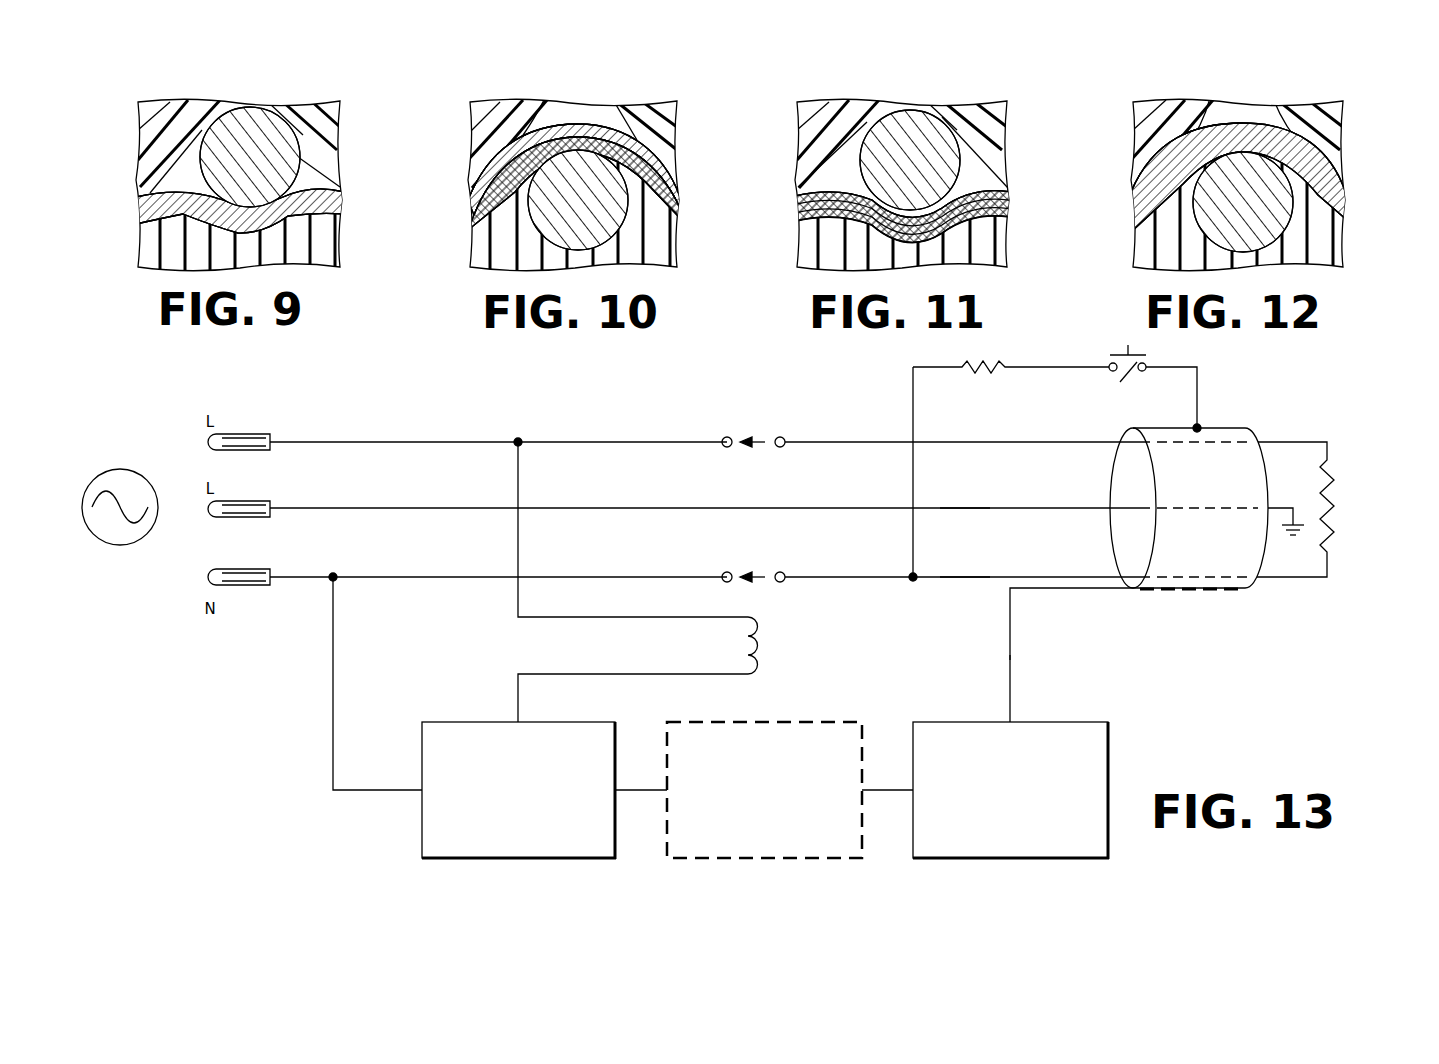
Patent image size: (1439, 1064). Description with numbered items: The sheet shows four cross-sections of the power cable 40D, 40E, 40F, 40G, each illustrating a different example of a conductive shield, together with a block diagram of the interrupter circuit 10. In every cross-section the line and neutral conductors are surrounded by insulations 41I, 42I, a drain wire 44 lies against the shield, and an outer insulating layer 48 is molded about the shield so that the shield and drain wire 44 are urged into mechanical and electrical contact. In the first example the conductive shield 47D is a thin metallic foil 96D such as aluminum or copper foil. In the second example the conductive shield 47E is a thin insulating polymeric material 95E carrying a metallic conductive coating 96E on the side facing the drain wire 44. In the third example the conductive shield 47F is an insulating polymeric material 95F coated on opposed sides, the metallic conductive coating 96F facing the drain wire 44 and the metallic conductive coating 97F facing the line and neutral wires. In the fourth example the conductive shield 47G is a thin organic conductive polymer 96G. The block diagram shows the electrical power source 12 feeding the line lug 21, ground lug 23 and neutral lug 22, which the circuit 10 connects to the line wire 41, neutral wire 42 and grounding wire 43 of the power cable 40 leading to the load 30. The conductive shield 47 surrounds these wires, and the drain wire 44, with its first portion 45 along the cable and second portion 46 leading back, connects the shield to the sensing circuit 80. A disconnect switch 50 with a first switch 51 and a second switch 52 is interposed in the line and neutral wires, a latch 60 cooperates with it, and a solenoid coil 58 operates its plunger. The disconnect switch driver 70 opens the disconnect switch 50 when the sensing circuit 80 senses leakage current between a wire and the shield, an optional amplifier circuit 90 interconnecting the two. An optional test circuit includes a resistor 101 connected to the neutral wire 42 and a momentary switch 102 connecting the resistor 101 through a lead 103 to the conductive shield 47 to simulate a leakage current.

In FIG. 9, the power cable 40D is at (240, 169).
In FIG. 10, the power cable 40E is at (574, 171).
In FIG. 11, the power cable 40F is at (902, 171).
In FIG. 12, the power cable 40G is at (1238, 171).
In FIG. 9, the insulation of line wire 41I is at (180, 129).
In FIG. 10, the insulation of line wire 41I is at (507, 126).
In FIG. 11, the insulation of line wire 41I is at (838, 126).
In FIG. 12, the insulation of line wire 41I is at (1172, 126).
In FIG. 9, the insulation of neutral wire 42I is at (304, 126).
In FIG. 10, the insulation of neutral wire 42I is at (644, 113).
In FIG. 11, the insulation of neutral wire 42I is at (967, 126).
In FIG. 12, the insulation of neutral wire 42I is at (1308, 107).
In FIG. 9, the drain wire 44 is at (250, 125).
In FIG. 10, the drain wire 44 is at (578, 150).
In FIG. 11, the drain wire 44 is at (910, 126).
In FIG. 12, the drain wire 44 is at (1243, 151).
In FIG. 13, the drain wire 44 is at (1012, 591).
In FIG. 9, the conductive shield 47D is at (204, 201).
In FIG. 10, the conductive shield 47E is at (491, 169).
In FIG. 11, the conductive shield 47F is at (873, 206).
In FIG. 12, the conductive shield 47G is at (1158, 169).
In FIG. 9, the thin metallic foil 96D is at (275, 212).
In FIG. 10, the insulating polymeric material 95E is at (606, 183).
In FIG. 10, the metallic conductive coating 96E is at (603, 191).
In FIG. 11, the metallic conductive coating 96F is at (924, 185).
In FIG. 11, the insulating polymeric material 95F is at (931, 216).
In FIG. 11, the metallic conductive coating 97F is at (930, 238).
In FIG. 12, the organic conductive polymer 96G is at (1270, 177).
In FIG. 9, the outer insulating layer 48 is at (273, 243).
In FIG. 10, the outer insulating layer 48 is at (597, 220).
In FIG. 11, the outer insulating layer 48 is at (926, 245).
In FIG. 12, the outer insulating layer 48 is at (1263, 220).
In FIG. 13, the circuit 10 is at (333, 412).
In FIG. 13, the electrical power source 12 is at (120, 545).
In FIG. 13, the line lug 21 is at (258, 434).
In FIG. 13, the ground lug 23 is at (258, 501).
In FIG. 13, the neutral lug 22 is at (262, 586).
In FIG. 13, the power cable 40 is at (600, 425).
In FIG. 13, the disconnect switch 50 is at (743, 498).
In FIG. 13, the first switch 51 is at (781, 436).
In FIG. 13, the second switch 52 is at (780, 583).
In FIG. 13, the latch 60 is at (815, 430).
In FIG. 13, the solenoid coil 58 is at (740, 645).
In FIG. 13, the line wire 41 is at (964, 438).
In FIG. 13, the neutral wire 42 is at (964, 581).
In FIG. 13, the grounding wire 43 is at (964, 512).
In FIG. 13, the first portion of drain wire 45 is at (1200, 590).
In FIG. 13, the second portion of drain wire 46 is at (1012, 674).
In FIG. 13, the conductive shield 47 is at (1233, 428).
In FIG. 13, the resistor 101 is at (1000, 372).
In FIG. 13, the momentary switch 102 is at (1120, 380).
In FIG. 13, the test lead 103 is at (1197, 388).
In FIG. 13, the load 30 is at (1330, 491).
In FIG. 13, the disconnect switch driver 70 is at (447, 722).
In FIG. 13, the amplifier circuit 90 is at (825, 722).
In FIG. 13, the sensing circuit 80 is at (938, 722).